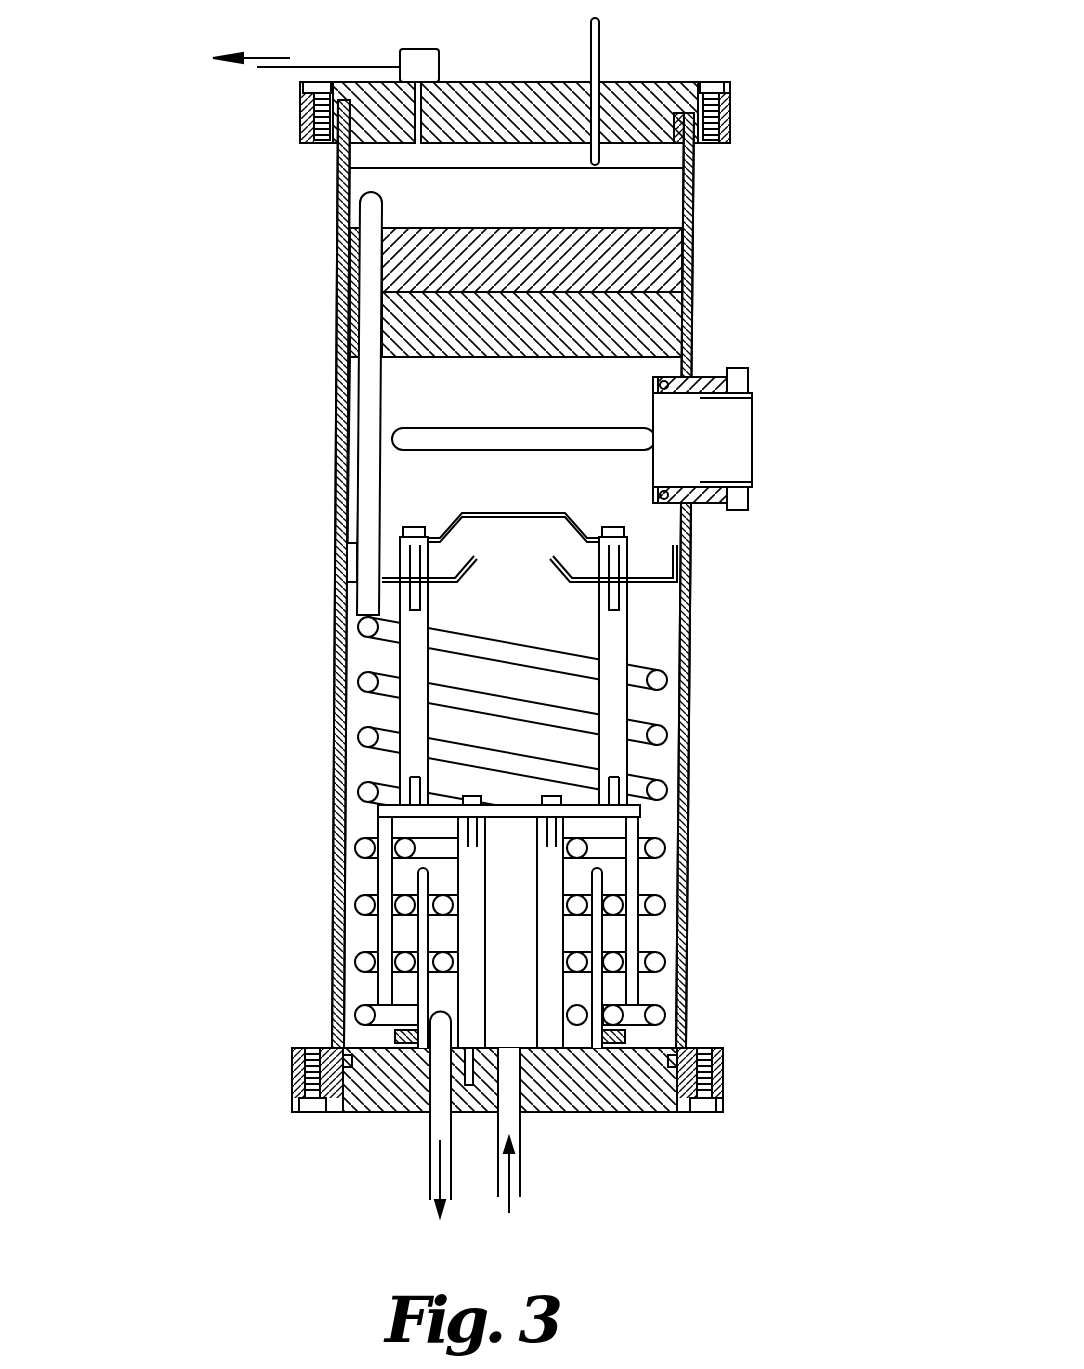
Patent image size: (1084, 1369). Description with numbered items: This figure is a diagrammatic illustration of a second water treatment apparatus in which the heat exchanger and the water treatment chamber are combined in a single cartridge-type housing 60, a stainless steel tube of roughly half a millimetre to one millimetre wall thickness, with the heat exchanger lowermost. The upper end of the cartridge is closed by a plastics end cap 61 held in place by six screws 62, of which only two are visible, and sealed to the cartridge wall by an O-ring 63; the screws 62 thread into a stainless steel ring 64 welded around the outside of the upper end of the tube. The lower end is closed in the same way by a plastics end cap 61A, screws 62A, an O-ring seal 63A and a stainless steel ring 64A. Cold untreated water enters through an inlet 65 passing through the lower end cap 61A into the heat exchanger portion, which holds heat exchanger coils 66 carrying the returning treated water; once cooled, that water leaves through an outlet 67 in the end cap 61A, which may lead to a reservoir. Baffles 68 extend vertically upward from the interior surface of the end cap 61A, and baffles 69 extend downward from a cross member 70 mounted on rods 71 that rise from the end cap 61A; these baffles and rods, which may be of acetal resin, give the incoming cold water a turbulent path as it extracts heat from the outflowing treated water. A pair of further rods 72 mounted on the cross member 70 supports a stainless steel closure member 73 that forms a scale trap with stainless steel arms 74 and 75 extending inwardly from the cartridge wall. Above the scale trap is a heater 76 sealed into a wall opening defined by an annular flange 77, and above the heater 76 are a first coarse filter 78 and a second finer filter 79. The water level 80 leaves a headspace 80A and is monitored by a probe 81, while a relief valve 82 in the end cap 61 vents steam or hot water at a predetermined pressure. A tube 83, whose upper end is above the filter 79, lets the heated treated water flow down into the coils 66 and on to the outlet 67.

The cartridge-type housing 60 is at (700, 650).
The plastics end cap 61 is at (676, 101).
The plastics end cap 61A is at (641, 1113).
The screws 62 is at (713, 84).
The screws 62A is at (305, 1113).
The O-ring 63 is at (727, 128).
The O-ring seal 63A is at (333, 1049).
The stainless steel ring 64 is at (696, 145).
The stainless steel ring 64A is at (724, 1062).
The inlet 65 is at (520, 1126).
The heat exchanger coils 66 is at (566, 658).
The outlet 67 is at (450, 1172).
The baffles 68 is at (427, 938).
The baffles 69 is at (386, 879).
The cross member 70 is at (509, 818).
The rods 71 is at (477, 877).
The further rods 72 is at (415, 676).
The stainless steel closure member 73 is at (550, 512).
The stainless steel arm 74 is at (648, 593).
The stainless steel arm 75 is at (467, 572).
The heater 76 is at (572, 430).
The annular flange 77 is at (688, 394).
The first coarse filter 78 is at (442, 330).
The second finer filter 79 is at (442, 260).
The water level 80 is at (348, 173).
The headspace 80A is at (527, 155).
The probe 81 is at (599, 60).
The relief valve 82 is at (426, 50).
The tube 83 is at (372, 211).